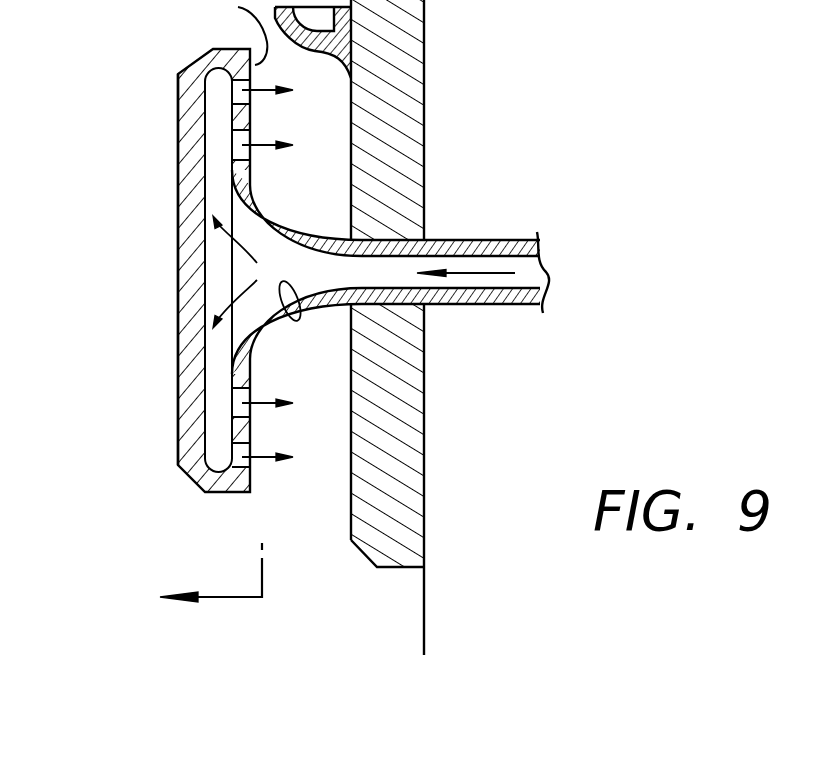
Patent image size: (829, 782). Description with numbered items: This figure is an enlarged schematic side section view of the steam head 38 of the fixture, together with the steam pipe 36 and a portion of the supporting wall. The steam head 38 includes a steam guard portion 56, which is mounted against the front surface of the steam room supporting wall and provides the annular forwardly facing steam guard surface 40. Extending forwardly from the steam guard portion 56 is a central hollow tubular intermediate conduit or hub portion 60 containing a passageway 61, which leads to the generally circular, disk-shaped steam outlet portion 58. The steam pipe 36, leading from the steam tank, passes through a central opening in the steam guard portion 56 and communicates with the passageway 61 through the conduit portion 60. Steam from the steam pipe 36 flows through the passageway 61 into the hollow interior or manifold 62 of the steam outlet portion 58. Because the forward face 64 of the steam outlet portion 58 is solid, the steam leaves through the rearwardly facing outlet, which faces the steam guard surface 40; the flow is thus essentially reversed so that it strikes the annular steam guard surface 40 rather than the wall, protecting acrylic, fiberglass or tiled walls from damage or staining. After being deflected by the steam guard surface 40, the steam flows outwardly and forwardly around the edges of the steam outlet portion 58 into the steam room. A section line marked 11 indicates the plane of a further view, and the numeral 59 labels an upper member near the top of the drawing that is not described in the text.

The steam pipe 36 is at (478, 240).
The steam head 38 is at (141, 42).
The steam guard surface 40 is at (350, 458).
The steam guard portion 56 is at (388, 592).
The steam outlet portion 58 is at (155, 407).
The upper mounting member 59 is at (312, 7).
The conduit portion 60 is at (299, 230).
The passageway 61 is at (296, 322).
The manifold 62 is at (205, 127).
The forward face 64 is at (178, 284).
The section line 11- 11 is at (211, 593).